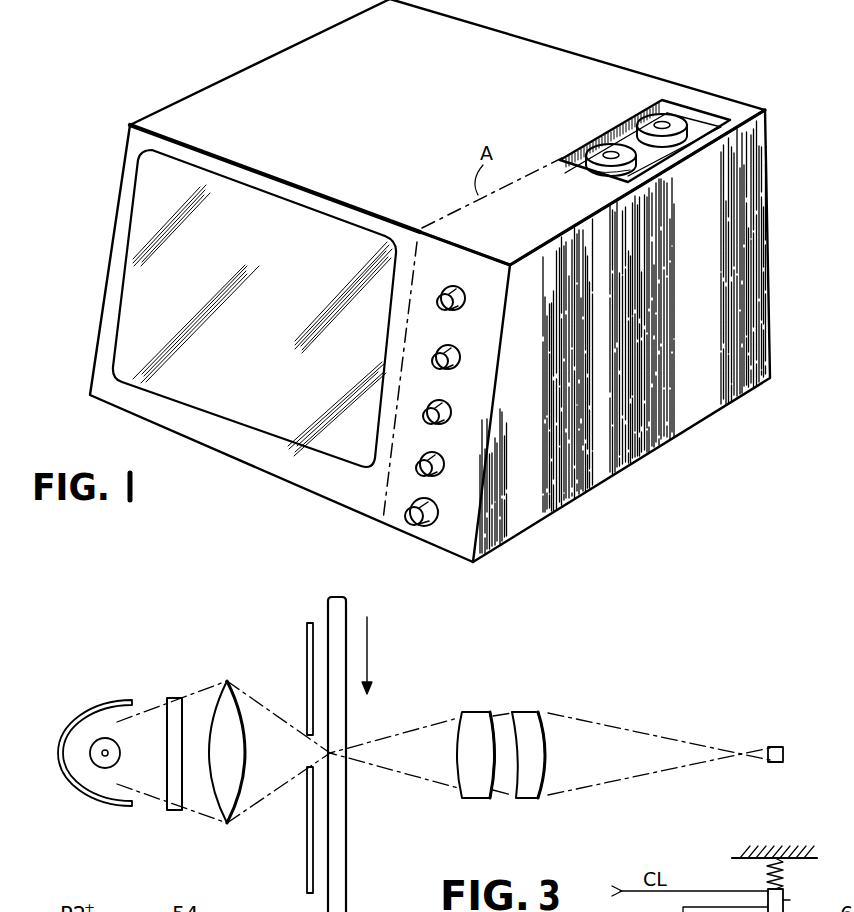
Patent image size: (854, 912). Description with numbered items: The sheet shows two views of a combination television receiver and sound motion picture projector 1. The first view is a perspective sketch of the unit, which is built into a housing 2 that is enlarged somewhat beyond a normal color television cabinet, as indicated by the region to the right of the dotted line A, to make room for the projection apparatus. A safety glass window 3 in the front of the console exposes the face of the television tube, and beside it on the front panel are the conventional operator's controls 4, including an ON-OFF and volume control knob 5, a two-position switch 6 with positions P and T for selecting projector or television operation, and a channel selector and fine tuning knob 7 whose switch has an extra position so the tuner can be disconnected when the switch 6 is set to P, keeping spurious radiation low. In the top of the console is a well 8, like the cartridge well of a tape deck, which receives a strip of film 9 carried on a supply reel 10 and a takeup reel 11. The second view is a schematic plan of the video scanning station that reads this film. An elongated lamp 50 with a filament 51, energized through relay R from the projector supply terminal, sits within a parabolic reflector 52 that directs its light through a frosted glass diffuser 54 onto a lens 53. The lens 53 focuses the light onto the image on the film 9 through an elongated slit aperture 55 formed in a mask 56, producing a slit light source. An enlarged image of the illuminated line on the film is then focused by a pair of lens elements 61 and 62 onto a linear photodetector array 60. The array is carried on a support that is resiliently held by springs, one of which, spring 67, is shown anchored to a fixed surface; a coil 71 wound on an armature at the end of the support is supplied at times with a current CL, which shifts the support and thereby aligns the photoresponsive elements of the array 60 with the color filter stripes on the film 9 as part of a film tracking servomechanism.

In FIG. 1, the combination television receiver and sound motion picture projector 1 is at (430, 281).
In FIG. 1, the housing 2 is at (560, 42).
In FIG. 1, the safety glass window 3 is at (127, 352).
In FIG. 1, the operator's controls 4 is at (463, 298).
In FIG. 1, the ON-OFF and volume control knob 5 is at (451, 408).
In FIG. 1, the switch 6 is at (444, 467).
In FIG. 1, the channel selector and fine tuning knob 7 is at (438, 514).
In FIG. 1, the well 8 is at (663, 122).
In FIG. 1, the strip of film 9 is at (643, 160).
In FIG. 3, the strip of film 9 is at (347, 816).
In FIG. 1, the supply reel 10 is at (672, 113).
In FIG. 1, the takeup reel 11 is at (600, 165).
In FIG. 3, the lamp 50 is at (118, 745).
In FIG. 3, the filament 51 is at (108, 757).
In FIG. 3, the parabolic reflector 52 is at (88, 705).
In FIG. 3, the lens 53 is at (233, 693).
In FIG. 3, the diffuser 54 is at (175, 696).
In FIG. 3, the slit aperture 55 is at (310, 757).
In FIG. 3, the mask 56 is at (305, 625).
In FIG. 3, the linear photodetector array 60 is at (773, 742).
In FIG. 3, the lens element 61 is at (478, 712).
In FIG. 3, the lens element 62 is at (530, 712).
In FIG. 3, the spring 67 is at (788, 872).
In FIG. 3, the coil 71 is at (782, 894).